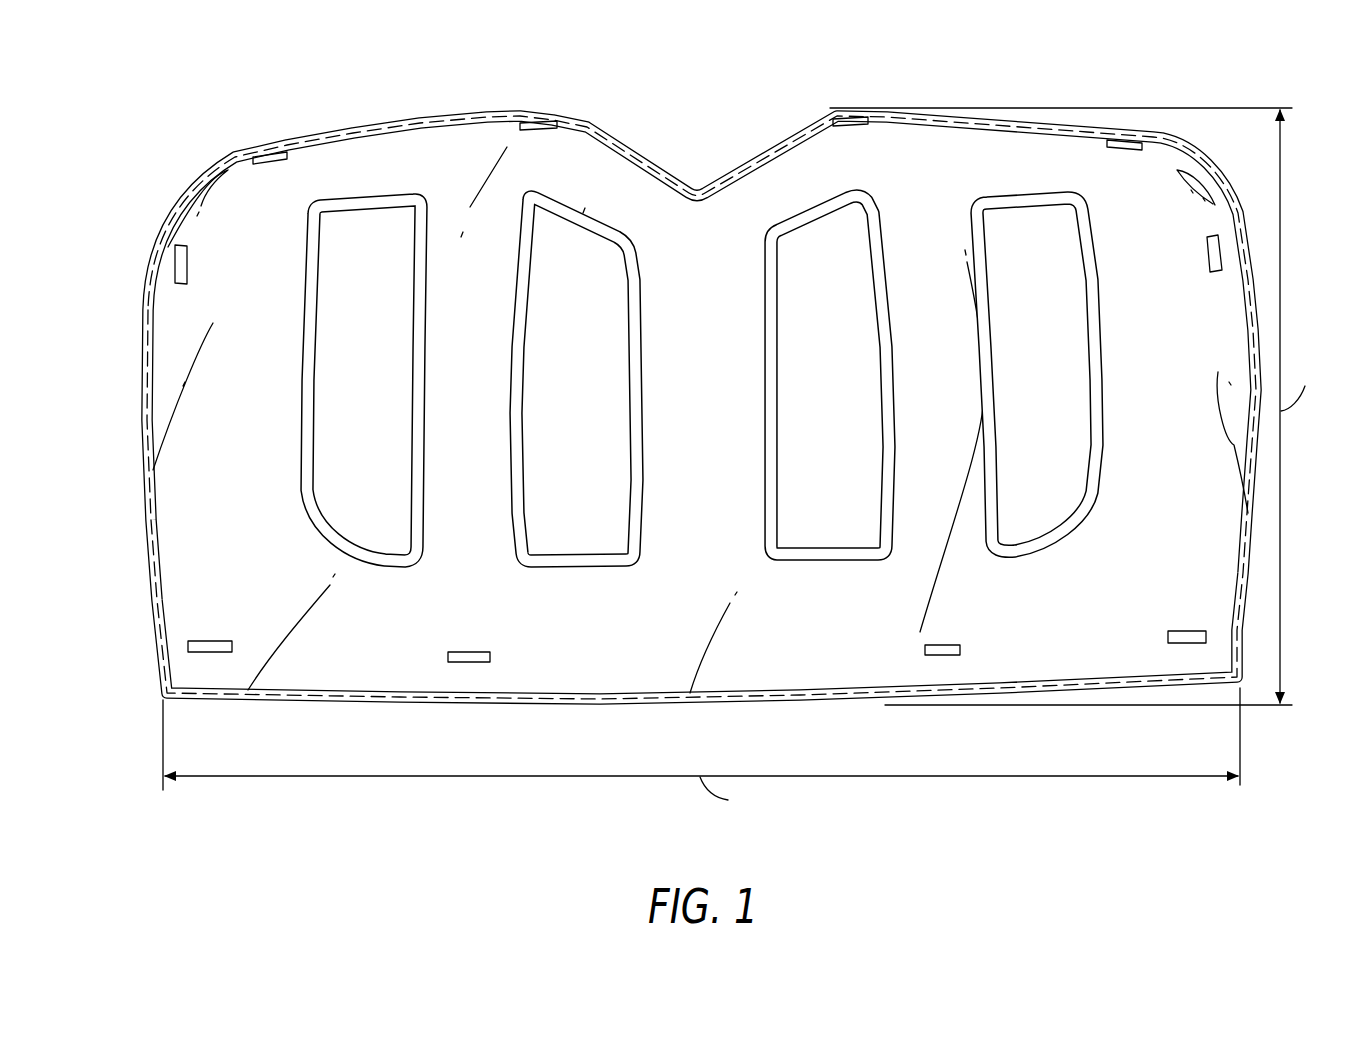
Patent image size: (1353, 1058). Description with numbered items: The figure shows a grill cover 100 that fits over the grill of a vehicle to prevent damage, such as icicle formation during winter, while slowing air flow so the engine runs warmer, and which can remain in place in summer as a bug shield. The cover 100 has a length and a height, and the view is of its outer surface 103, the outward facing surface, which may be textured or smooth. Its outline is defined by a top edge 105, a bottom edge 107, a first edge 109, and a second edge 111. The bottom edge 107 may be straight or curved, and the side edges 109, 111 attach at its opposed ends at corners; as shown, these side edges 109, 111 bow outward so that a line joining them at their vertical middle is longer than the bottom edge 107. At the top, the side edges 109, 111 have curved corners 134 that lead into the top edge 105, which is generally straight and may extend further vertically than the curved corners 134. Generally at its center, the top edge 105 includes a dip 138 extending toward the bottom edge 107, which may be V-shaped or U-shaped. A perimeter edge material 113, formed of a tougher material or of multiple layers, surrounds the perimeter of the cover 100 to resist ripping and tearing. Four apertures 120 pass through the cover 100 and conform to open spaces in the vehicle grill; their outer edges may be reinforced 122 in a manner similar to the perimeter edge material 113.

The grill cover 100 is at (170, 124).
The outer surface 103 is at (493, 133).
The top edge 105 is at (841, 106).
The bottom edge 107 is at (352, 705).
The first edge 109 is at (140, 450).
The second edge 111 is at (1261, 332).
The perimeter edge material 113 is at (335, 124).
The apertures 120 is at (837, 320).
The reinforcement 122 is at (583, 213).
The curved corners 134 is at (167, 208).
The dip 138 is at (704, 182).